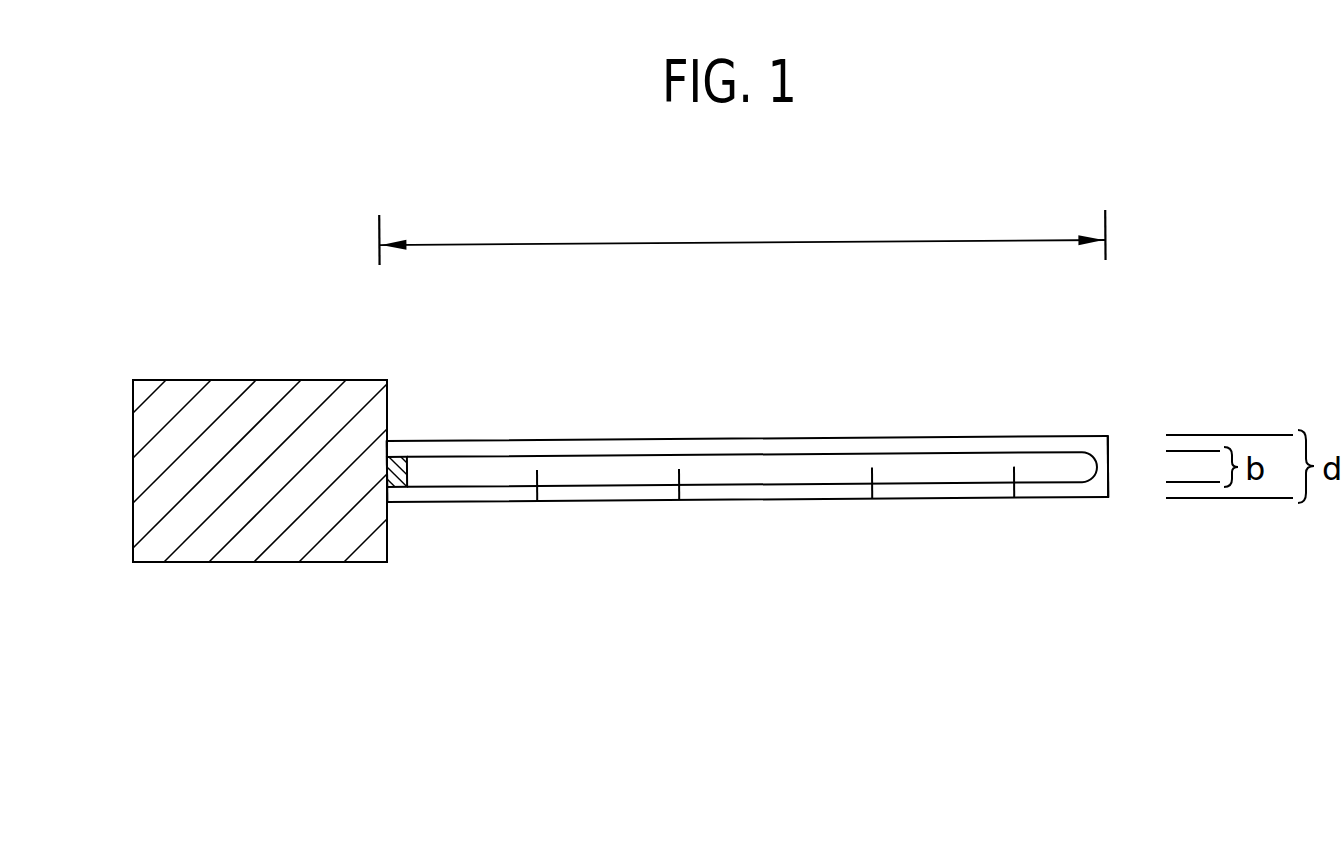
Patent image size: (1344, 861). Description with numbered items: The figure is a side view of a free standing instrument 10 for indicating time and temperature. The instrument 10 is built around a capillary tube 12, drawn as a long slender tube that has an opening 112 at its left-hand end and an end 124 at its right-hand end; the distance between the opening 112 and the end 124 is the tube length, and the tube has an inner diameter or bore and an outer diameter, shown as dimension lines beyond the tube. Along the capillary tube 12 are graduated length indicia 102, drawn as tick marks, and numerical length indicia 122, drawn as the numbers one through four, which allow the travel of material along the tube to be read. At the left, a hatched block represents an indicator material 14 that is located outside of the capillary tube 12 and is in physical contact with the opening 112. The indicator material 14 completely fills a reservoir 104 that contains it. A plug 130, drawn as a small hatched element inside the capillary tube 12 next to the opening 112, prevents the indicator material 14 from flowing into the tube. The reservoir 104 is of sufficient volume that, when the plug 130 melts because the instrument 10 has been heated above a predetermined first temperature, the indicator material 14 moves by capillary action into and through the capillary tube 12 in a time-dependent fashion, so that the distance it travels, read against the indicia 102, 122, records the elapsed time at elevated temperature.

The instrument 10 is at (690, 820).
The capillary tube 12 is at (915, 502).
The indicator material 14 is at (232, 525).
The graduated length indicia 102 is at (677, 493).
The reservoir 104 is at (133, 485).
The opening 112 is at (385, 481).
The numerical length indicia 122 is at (880, 462).
The end 124 is at (1112, 475).
The plug 130 is at (408, 470).